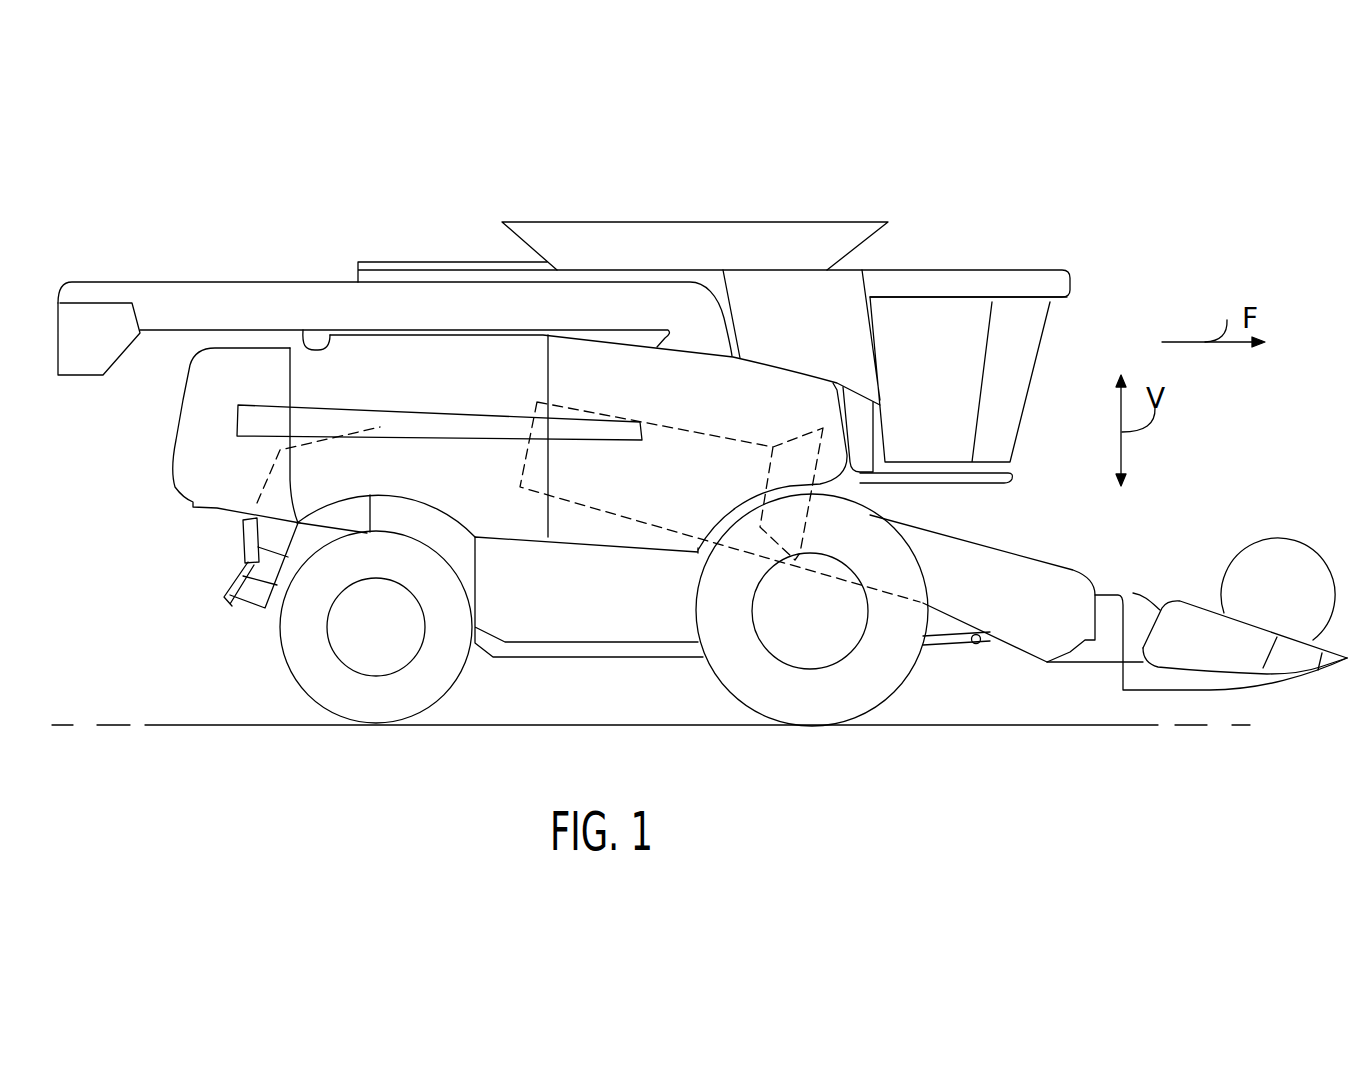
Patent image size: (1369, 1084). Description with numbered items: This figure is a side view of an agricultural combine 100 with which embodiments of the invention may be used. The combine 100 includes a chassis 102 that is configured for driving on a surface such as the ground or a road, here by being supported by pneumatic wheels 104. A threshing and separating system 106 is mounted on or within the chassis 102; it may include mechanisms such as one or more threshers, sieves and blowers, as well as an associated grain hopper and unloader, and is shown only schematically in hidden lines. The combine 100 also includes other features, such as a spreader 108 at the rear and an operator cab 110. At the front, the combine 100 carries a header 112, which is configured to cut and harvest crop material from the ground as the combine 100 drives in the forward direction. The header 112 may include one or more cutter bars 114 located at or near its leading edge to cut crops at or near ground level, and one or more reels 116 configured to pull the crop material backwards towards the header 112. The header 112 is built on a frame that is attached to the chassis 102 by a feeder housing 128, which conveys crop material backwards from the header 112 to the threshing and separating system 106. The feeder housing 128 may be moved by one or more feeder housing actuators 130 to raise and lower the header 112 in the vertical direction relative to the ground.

The agricultural combine 100 is at (1068, 179).
The chassis 102 is at (533, 613).
The pneumatic wheels 104 is at (813, 702).
The threshing and separating system 106 is at (638, 508).
The spreader 108 is at (243, 566).
The operator cab 110 is at (942, 313).
The header 112 is at (1202, 657).
The cutter bar 114 is at (1262, 678).
The reel 116 is at (1240, 578).
The feeder housing 128 is at (1033, 628).
The feeder housing actuator 130 is at (937, 643).